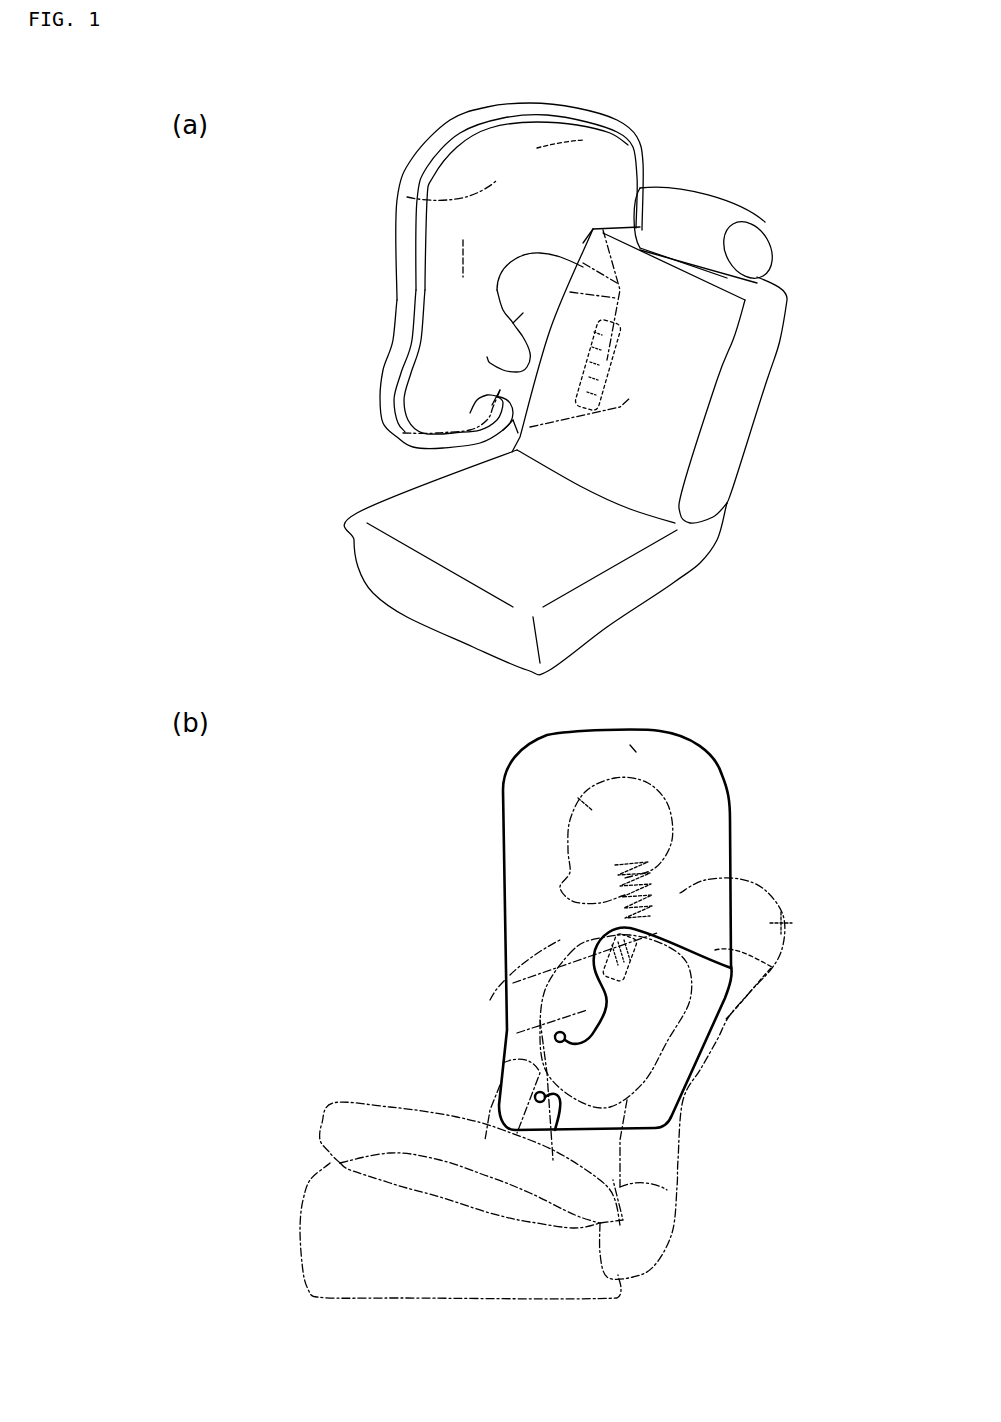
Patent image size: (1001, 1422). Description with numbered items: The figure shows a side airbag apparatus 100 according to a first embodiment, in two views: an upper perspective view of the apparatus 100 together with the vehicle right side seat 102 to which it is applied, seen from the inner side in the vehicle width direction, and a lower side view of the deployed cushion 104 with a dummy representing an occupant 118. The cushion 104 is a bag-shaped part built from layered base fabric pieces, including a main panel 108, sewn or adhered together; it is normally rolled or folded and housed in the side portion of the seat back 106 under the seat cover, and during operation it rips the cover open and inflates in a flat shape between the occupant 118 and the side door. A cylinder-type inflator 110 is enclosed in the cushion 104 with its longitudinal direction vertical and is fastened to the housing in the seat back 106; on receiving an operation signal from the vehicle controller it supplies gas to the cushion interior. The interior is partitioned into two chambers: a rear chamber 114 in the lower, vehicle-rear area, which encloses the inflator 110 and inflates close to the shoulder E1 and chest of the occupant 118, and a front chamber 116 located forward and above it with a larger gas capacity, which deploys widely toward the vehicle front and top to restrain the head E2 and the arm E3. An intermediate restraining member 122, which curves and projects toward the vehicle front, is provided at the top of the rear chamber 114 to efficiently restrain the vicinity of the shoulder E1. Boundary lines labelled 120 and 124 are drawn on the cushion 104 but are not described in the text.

The side airbag apparatus 100 is at (365, 163).
The vehicle right side seat 102 is at (728, 205).
The cushion 104 is at (640, 121).
The seat back 106 is at (778, 290).
The main panel 108 is at (583, 243).
The inflator 110 is at (618, 340).
The rear chamber 114 is at (542, 252).
The front chamber 116 is at (407, 197).
The occupant 118 is at (650, 808).
The chamber 120 is at (410, 291).
The intermediate restraining member 122 is at (510, 323).
The lower chamber 124 is at (403, 433).
The shoulder E1 is at (655, 925).
The head E2 is at (590, 812).
The arm E3 is at (520, 978).